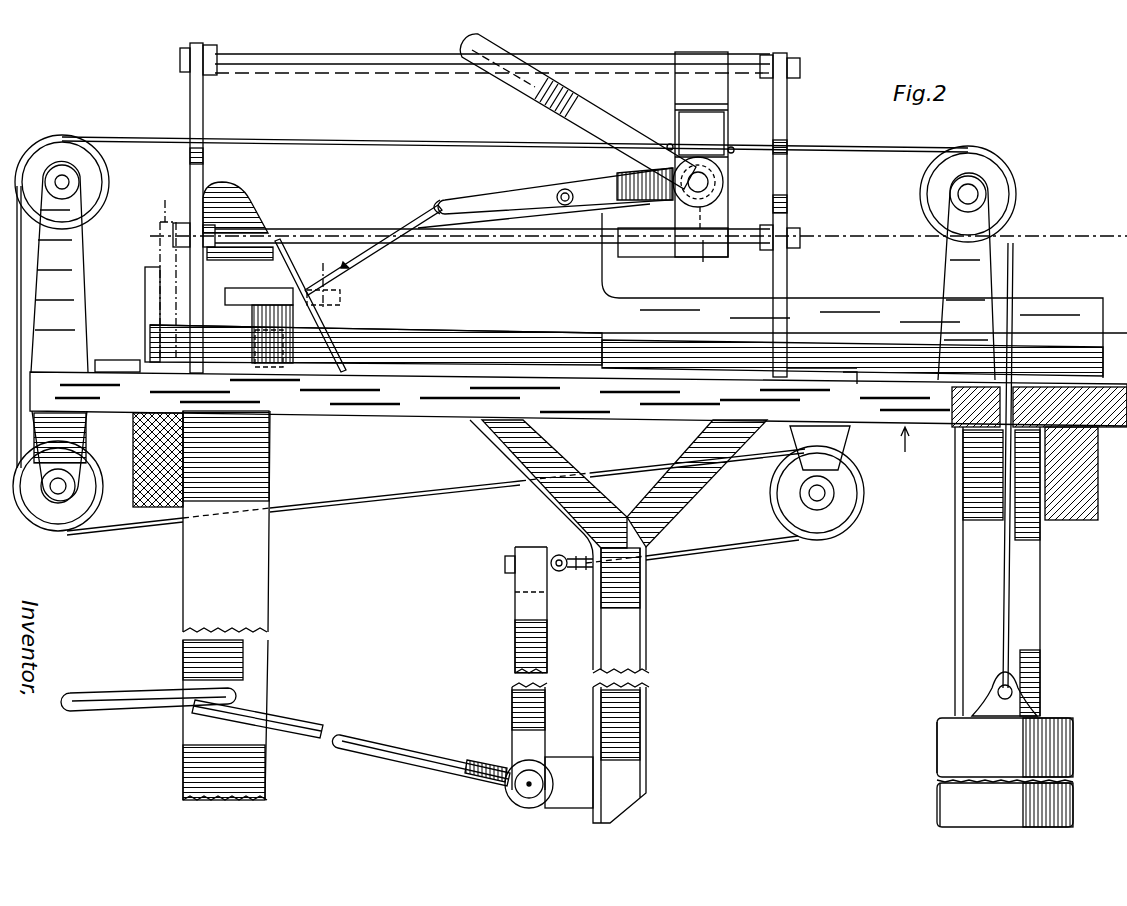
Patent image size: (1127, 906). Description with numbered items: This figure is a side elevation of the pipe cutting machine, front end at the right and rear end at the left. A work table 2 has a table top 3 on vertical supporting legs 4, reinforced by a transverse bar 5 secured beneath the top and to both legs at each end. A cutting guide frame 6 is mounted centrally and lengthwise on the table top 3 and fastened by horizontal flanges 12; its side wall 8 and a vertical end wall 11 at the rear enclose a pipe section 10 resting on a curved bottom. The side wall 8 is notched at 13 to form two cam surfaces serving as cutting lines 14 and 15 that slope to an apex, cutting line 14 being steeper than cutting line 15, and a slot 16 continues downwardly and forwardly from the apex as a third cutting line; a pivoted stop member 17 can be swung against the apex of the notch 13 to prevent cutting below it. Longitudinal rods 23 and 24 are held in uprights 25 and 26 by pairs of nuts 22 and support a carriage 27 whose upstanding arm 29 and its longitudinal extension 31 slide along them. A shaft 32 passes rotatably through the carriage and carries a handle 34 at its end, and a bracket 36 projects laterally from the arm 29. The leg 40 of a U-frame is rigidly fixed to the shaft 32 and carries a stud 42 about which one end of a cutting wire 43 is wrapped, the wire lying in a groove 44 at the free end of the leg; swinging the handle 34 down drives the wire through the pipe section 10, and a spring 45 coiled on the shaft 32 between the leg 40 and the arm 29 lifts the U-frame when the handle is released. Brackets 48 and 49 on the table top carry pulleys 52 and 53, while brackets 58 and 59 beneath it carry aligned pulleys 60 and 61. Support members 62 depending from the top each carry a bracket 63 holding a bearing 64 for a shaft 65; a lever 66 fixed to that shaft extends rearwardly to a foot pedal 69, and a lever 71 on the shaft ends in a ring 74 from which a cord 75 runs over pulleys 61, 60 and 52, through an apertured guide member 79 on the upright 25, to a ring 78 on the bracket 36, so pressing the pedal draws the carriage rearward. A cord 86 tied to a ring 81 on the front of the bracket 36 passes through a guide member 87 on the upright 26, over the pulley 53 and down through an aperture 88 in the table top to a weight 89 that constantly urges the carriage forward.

The work table 2 is at (902, 451).
The table top 3 is at (632, 414).
The vertical supporting legs 4 is at (245, 578).
The bar 5 is at (183, 478).
The cutting guide frame 6 is at (415, 350).
The side wall 8 is at (562, 335).
The pipe section 10 is at (155, 269).
The vertical end wall 11 is at (145, 286).
The horizontal flanges 12 is at (115, 360).
The notch 13 is at (345, 264).
The cutting line 14 is at (281, 250).
The cutting line 15 is at (367, 250).
The slot 16 is at (333, 334).
The stop member 17 is at (242, 297).
The nuts 22 is at (210, 48).
The longitudinal rod 23 is at (345, 55).
The longitudinal rod 24 is at (487, 247).
The upright 25 is at (204, 107).
The upright 26 is at (788, 185).
The carriage 27 is at (742, 108).
The upstanding arm 29 is at (712, 218).
The longitudinal extension 31 is at (628, 258).
The shaft 32 is at (723, 181).
The handle 34 is at (593, 108).
The bracket 36 is at (697, 150).
The leg 40 is at (595, 196).
The stud 42 is at (558, 192).
The cutting wire 43 is at (492, 200).
The groove 44 is at (437, 211).
The spring 45 is at (700, 258).
The bracket 48 is at (75, 250).
The bracket 49 is at (943, 268).
The pulley 52 is at (38, 155).
The pulley 53 is at (1003, 172).
The bracket 58 is at (67, 437).
The bracket 59 is at (840, 462).
The pulley 60 is at (75, 522).
The pulley 61 is at (825, 527).
The support member 62 is at (640, 630).
The bracket 63 is at (562, 757).
The bearing 64 is at (518, 764).
The shaft 65 is at (520, 788).
The lever 66 is at (375, 733).
The foot pedal 69 is at (138, 690).
The lever 71 is at (513, 643).
The ring 74 is at (560, 572).
The cord 75 is at (365, 140).
The ring 78 is at (669, 144).
The apertured guide member 79 is at (192, 136).
The ring 81 is at (742, 148).
The cord 86 is at (1015, 263).
The apertured guide member 87 is at (788, 143).
The aperture 88 is at (963, 428).
The weight 89 is at (935, 748).